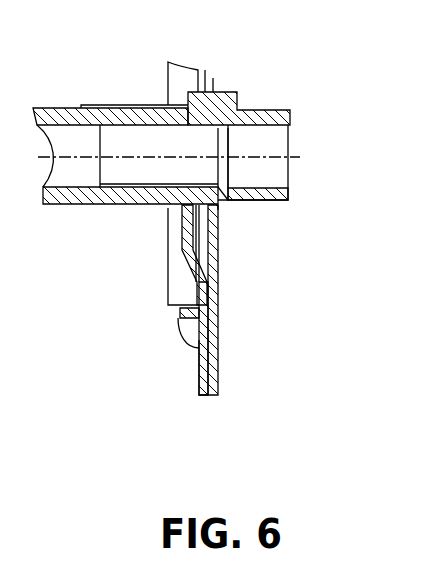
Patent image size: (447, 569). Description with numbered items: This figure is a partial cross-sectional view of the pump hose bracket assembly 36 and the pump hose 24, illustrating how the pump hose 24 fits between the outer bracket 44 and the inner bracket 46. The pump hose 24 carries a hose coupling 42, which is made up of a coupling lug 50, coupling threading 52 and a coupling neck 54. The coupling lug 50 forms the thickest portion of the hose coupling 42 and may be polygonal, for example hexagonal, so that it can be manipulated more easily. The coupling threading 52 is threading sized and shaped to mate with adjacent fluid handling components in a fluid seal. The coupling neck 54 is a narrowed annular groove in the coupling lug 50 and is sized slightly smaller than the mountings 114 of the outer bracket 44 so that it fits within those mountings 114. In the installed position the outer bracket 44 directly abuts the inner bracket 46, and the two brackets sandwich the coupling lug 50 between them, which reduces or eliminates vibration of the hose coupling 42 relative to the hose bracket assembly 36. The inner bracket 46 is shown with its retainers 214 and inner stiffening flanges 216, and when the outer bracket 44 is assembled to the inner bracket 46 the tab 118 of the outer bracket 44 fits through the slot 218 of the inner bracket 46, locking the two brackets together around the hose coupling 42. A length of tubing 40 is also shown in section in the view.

The pump hose 24 is at (275, 171).
The pump hose bracket assembly 36 is at (209, 348).
The pipe 40 is at (76, 192).
The hose coupling 42 is at (284, 204).
The outer bracket 44 is at (226, 399).
The inner bracket 46 is at (201, 410).
The coupling lug 50 is at (232, 213).
The coupling threading 52 is at (272, 108).
The coupling neck 54 is at (213, 78).
The mountings 114 is at (228, 210).
The tab 118 is at (174, 322).
The retainers 214 is at (185, 222).
The inner stiffening flanges 216 is at (188, 340).
The slot 218 is at (197, 304).